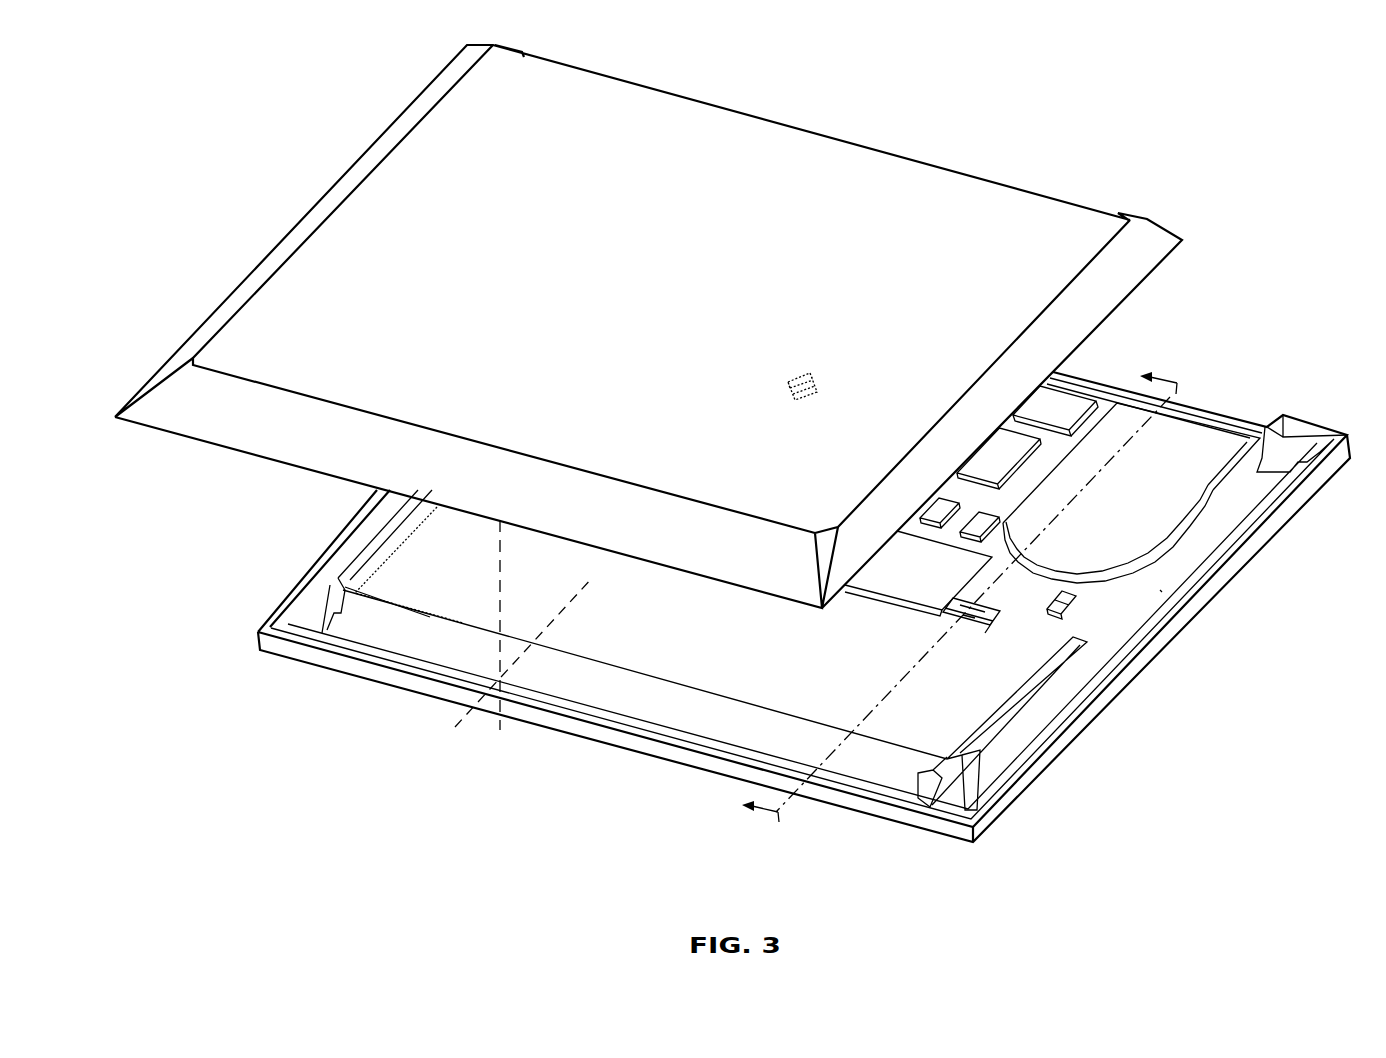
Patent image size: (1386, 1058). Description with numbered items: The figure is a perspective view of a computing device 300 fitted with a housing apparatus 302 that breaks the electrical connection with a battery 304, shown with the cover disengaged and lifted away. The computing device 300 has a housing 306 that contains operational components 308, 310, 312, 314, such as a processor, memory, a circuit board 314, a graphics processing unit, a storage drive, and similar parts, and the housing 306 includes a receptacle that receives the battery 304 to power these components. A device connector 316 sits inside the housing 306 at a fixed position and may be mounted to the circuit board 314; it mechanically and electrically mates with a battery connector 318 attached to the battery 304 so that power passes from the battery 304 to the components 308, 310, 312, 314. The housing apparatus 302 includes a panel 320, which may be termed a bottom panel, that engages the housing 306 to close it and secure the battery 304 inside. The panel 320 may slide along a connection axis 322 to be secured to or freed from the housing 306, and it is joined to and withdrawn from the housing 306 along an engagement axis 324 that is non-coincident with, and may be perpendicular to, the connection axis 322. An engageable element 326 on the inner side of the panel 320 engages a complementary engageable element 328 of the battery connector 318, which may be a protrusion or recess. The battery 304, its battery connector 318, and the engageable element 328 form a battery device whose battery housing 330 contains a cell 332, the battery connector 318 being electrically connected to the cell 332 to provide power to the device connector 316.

The computing device 300 is at (1277, 245).
The housing apparatus 302 is at (940, 121).
The battery 304 is at (773, 706).
The housing 306 is at (1253, 545).
The operational component 308 is at (1120, 606).
The operational component 310 is at (1065, 402).
The operational component 312 is at (1165, 482).
The circuit board 314 is at (1172, 586).
The device connector 316 is at (990, 612).
The battery connector 318 is at (985, 622).
The panel 320 is at (1005, 213).
The connection axis 322 is at (501, 659).
The engagement axis 324 is at (500, 641).
The engageable element 326 is at (815, 378).
The complementary engageable element 328 is at (956, 626).
The battery housing 330 is at (395, 597).
The cell 332 is at (427, 614).